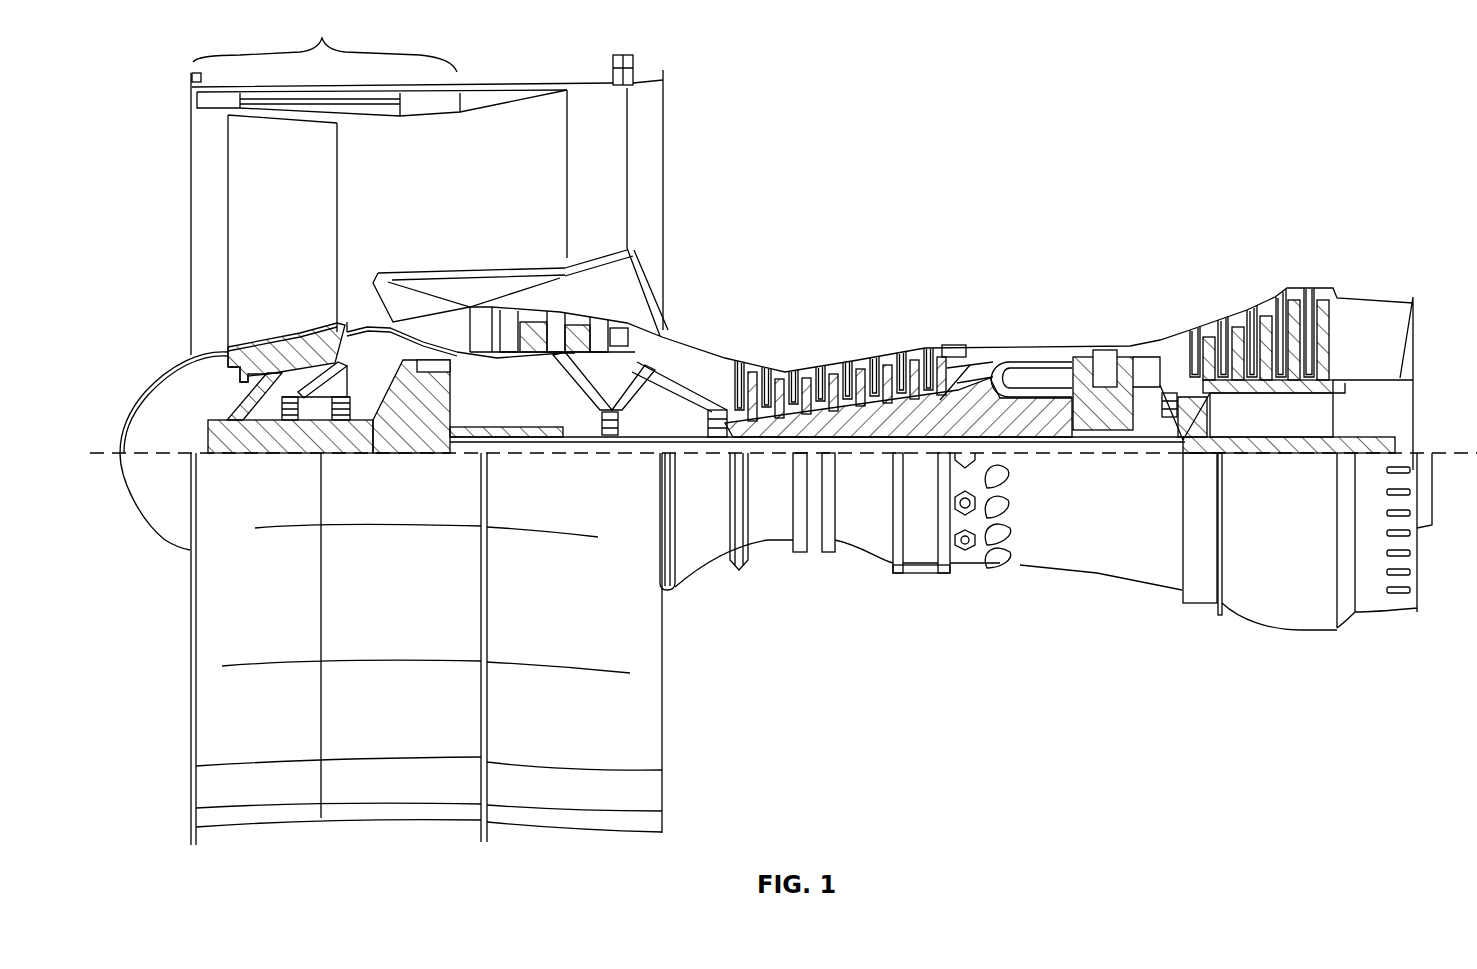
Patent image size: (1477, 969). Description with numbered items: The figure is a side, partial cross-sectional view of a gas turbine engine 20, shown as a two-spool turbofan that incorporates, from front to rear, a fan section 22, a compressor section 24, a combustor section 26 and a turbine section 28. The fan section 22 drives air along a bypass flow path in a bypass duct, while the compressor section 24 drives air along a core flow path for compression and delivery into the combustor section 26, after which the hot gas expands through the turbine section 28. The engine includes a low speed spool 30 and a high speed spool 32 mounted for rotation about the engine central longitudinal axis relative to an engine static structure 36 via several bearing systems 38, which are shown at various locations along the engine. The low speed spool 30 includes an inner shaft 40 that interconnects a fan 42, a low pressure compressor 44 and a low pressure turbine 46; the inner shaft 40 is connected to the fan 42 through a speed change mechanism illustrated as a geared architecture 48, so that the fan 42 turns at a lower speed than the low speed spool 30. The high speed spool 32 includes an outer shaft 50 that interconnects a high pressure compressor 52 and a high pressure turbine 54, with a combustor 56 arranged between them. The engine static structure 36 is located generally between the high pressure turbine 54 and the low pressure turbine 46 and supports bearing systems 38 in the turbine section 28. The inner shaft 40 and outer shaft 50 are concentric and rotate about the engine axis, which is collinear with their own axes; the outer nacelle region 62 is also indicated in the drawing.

The gas turbine engine 20 is at (1238, 120).
The fan section 22 is at (325, 41).
The compressor section 24 is at (855, 310).
The combustor section 26 is at (1010, 305).
The turbine section 28 is at (1210, 250).
The low speed spool 30 is at (885, 458).
The high speed spool 32 is at (945, 370).
The engine static structure 36 is at (925, 578).
The bearing systems 38 is at (292, 425).
The inner shaft 40 is at (672, 456).
The fan 42 is at (429, 478).
The low pressure compressor 44 is at (603, 330).
The low pressure turbine 46 is at (1270, 305).
The geared architecture 48 is at (423, 425).
The outer shaft 50 is at (1052, 440).
The high pressure compressor 52 is at (840, 410).
The high pressure turbine 54 is at (1105, 345).
The combustor 56 is at (1035, 370).
The nacelle 62 is at (210, 118).